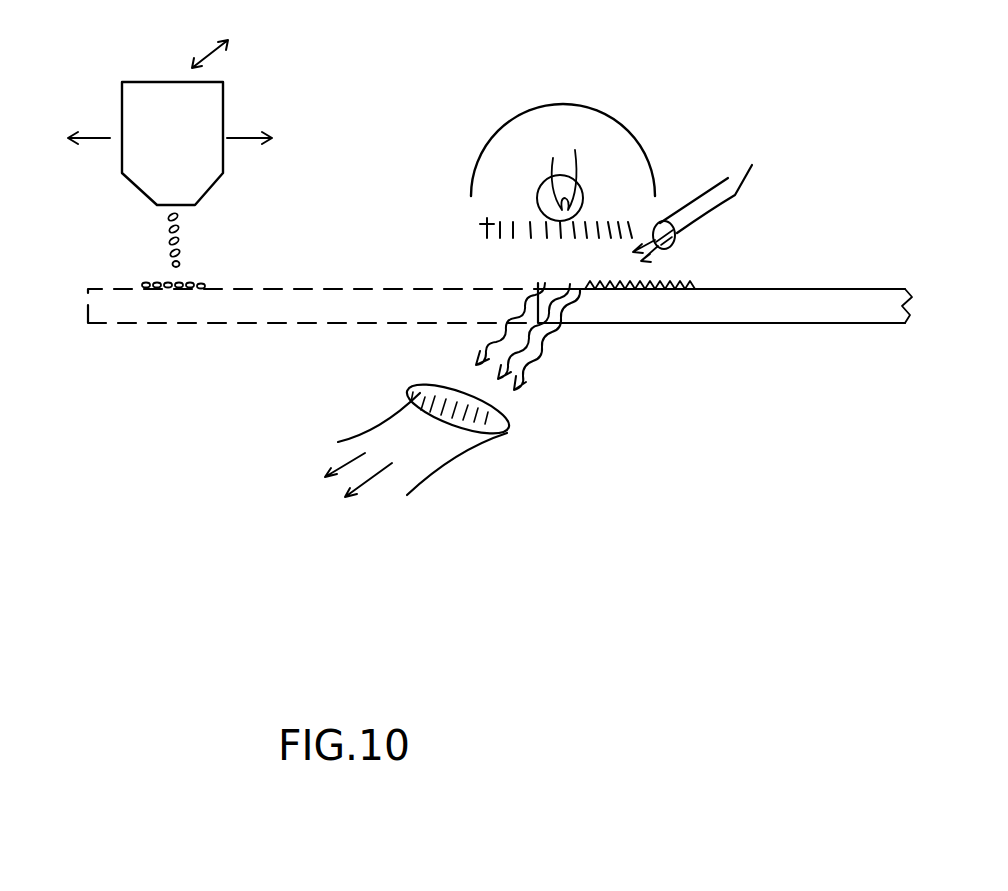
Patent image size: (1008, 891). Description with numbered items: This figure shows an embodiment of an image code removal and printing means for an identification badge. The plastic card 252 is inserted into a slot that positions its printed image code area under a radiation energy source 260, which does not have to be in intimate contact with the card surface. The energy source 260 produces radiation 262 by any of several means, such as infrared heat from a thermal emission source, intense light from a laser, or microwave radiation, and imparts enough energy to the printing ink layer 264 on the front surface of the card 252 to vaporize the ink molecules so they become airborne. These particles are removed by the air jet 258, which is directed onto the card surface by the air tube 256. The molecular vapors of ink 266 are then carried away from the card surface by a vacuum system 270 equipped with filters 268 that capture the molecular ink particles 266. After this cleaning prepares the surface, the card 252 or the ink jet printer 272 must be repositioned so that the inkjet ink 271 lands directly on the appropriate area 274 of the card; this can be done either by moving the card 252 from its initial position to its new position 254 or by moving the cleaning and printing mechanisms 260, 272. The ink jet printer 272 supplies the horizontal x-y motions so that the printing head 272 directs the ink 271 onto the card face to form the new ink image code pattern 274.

The card 252 is at (773, 305).
The new position 254 is at (107, 310).
The air tube 256 is at (728, 178).
The air jet 258 is at (675, 243).
The radiation energy source 260 is at (590, 110).
The radiation 262 is at (485, 217).
The printing ink layer 264 is at (678, 277).
The molecular vapors of ink 266 is at (544, 336).
The filters 268 is at (492, 413).
The vacuum system 270 is at (428, 468).
The inkjet ink 271 is at (183, 233).
The ink jet printer 272 is at (213, 115).
The new ink image code pattern 274 is at (197, 285).